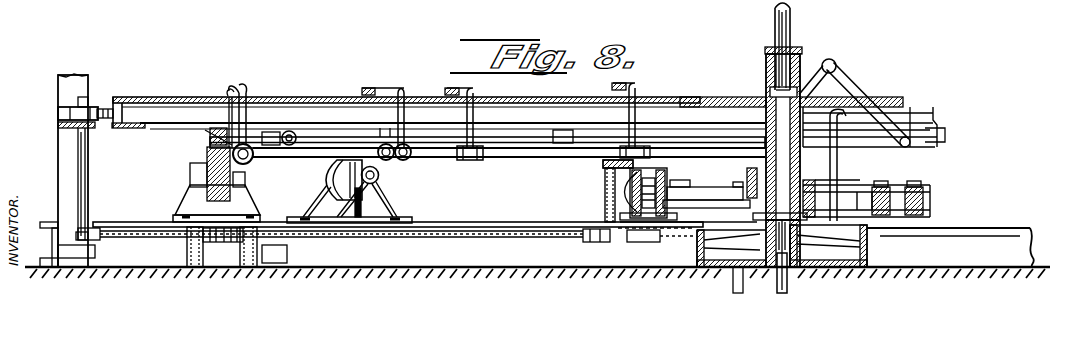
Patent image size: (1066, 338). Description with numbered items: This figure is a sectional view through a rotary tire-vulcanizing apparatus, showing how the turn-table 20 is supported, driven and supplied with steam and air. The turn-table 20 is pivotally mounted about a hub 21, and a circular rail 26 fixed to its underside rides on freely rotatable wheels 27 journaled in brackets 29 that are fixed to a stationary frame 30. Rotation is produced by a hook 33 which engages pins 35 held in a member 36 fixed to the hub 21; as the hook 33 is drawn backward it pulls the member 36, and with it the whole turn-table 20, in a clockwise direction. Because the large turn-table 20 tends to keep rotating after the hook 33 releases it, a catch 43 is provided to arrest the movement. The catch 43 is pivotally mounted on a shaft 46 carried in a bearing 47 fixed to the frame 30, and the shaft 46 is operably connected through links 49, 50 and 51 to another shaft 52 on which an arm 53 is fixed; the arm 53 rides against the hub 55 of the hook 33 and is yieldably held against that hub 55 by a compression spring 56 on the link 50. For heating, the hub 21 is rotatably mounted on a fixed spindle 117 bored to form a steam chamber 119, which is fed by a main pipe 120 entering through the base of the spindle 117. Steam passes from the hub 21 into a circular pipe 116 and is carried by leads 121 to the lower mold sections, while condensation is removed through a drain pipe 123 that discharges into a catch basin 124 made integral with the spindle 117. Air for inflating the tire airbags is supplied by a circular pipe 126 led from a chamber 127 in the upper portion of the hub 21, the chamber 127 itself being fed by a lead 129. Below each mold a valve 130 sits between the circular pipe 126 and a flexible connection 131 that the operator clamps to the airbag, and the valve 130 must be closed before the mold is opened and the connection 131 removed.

The turn-table 20 is at (160, 97).
The hub 21 is at (766, 82).
The circular rail 26 is at (208, 138).
The wheel 27 is at (322, 178).
The bracket 29 is at (244, 206).
The frame 30 is at (196, 265).
The hook 33 is at (642, 242).
The pin 35 is at (935, 208).
The member 36 is at (932, 199).
The catch 43 is at (100, 97).
The shaft 46 is at (88, 146).
The bearing 47 is at (66, 108).
The link 49 is at (92, 228).
The link 50 is at (398, 249).
The link 51 is at (606, 244).
The shaft 52 is at (605, 204).
The arm 53 is at (604, 178).
The hub 55 is at (672, 177).
The compression spring 56 is at (230, 245).
The circular pipe 116 is at (503, 159).
The spindle 117 is at (867, 250).
The steam chamber 119 is at (697, 245).
The main pipe 120 is at (787, 287).
The lead 121 is at (400, 92).
The drain pipe 123 is at (262, 101).
The catch basin 124 is at (912, 238).
The circular pipe 126 is at (342, 126).
The chamber 127 is at (770, 97).
The lead 129 is at (790, 24).
The valve 130 is at (288, 158).
The flexible connection 131 is at (236, 92).